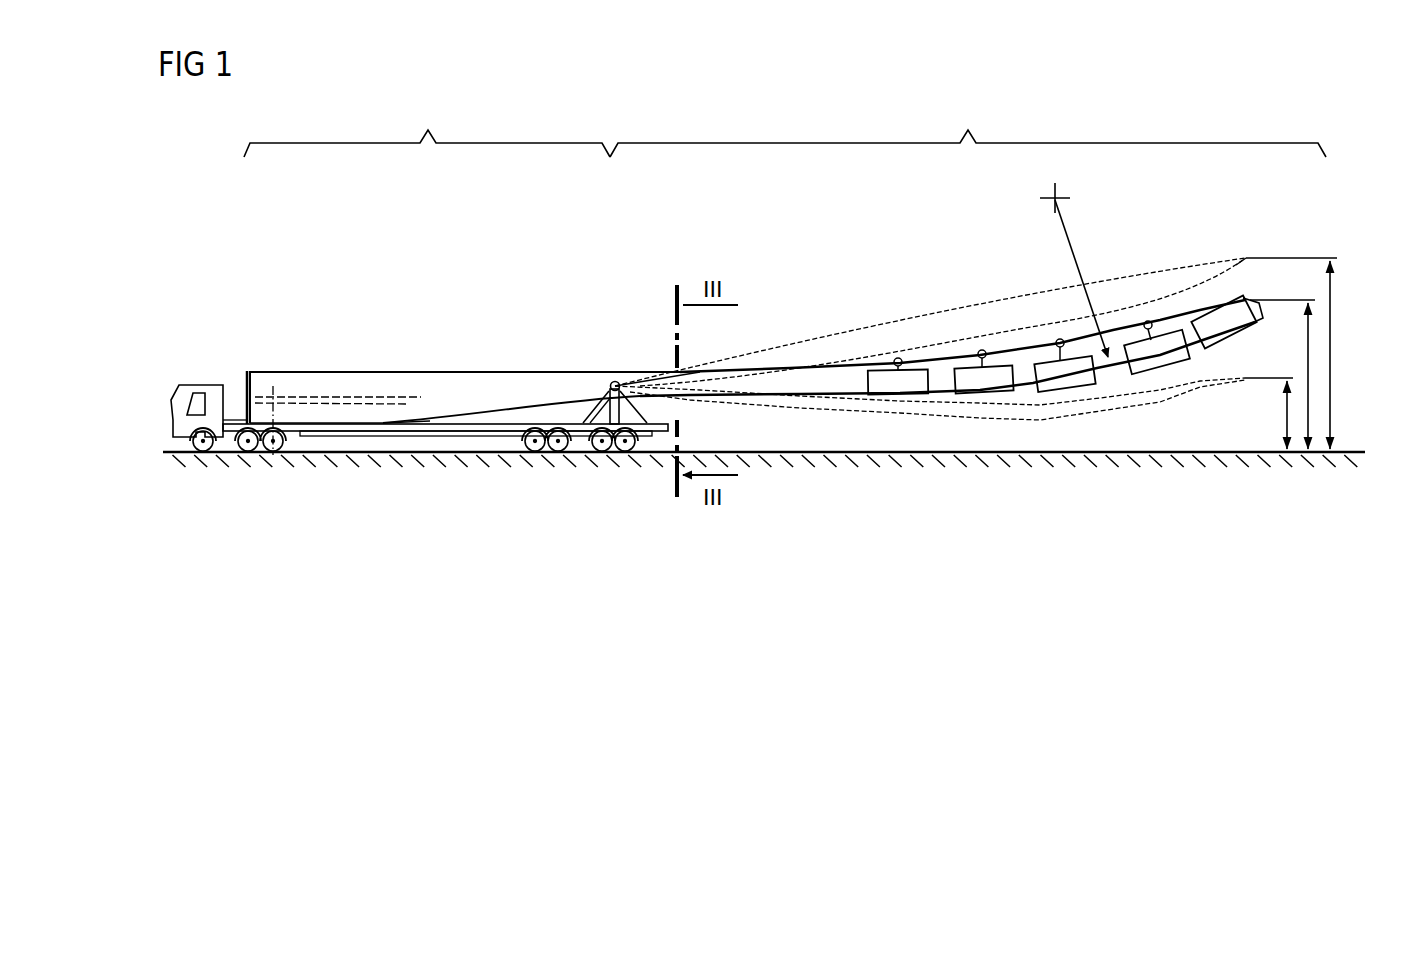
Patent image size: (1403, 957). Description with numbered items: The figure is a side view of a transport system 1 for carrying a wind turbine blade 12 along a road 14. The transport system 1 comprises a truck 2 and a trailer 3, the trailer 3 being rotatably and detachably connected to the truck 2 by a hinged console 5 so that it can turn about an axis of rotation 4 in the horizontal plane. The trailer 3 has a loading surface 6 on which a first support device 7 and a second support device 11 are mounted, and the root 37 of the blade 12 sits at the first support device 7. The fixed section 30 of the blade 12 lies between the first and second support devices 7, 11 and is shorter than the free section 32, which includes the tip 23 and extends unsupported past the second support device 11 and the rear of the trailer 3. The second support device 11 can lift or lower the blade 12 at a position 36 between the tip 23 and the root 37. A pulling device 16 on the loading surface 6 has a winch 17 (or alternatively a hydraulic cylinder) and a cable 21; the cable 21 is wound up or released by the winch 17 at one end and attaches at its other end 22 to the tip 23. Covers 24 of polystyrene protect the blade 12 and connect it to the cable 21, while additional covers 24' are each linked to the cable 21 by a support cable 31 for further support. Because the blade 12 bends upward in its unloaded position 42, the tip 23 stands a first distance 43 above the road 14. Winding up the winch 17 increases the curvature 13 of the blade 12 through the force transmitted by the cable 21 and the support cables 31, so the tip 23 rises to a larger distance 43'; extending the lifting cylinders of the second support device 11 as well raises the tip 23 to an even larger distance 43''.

The transport system 1 is at (504, 253).
The truck 2 is at (187, 455).
The trailer 3 is at (417, 432).
The axis of rotation 4 is at (273, 393).
The hinged console 5 is at (256, 455).
The loading surface 6 is at (493, 420).
The first support device 7 is at (241, 381).
The second support device 11 is at (592, 385).
The wind turbine blade 12 is at (442, 364).
The curvature 13 is at (1067, 232).
The road 14 is at (884, 462).
The pulling device 16 is at (936, 320).
The winch 17 is at (615, 381).
The cable 21 is at (1022, 342).
The end of the cable 22 is at (1243, 298).
The tip 23 is at (1233, 258).
The covers 24 is at (1062, 314).
The other covers 24' is at (930, 447).
The fixed section 30 is at (427, 129).
The support cable 31 is at (1060, 340).
The free section 32 is at (968, 129).
The position 36 is at (607, 374).
The root 37 is at (257, 373).
The unloaded position 42 is at (993, 408).
The first distance 43 is at (1259, 413).
The distance 43' is at (1316, 374).
The distance 43'' is at (1324, 353).